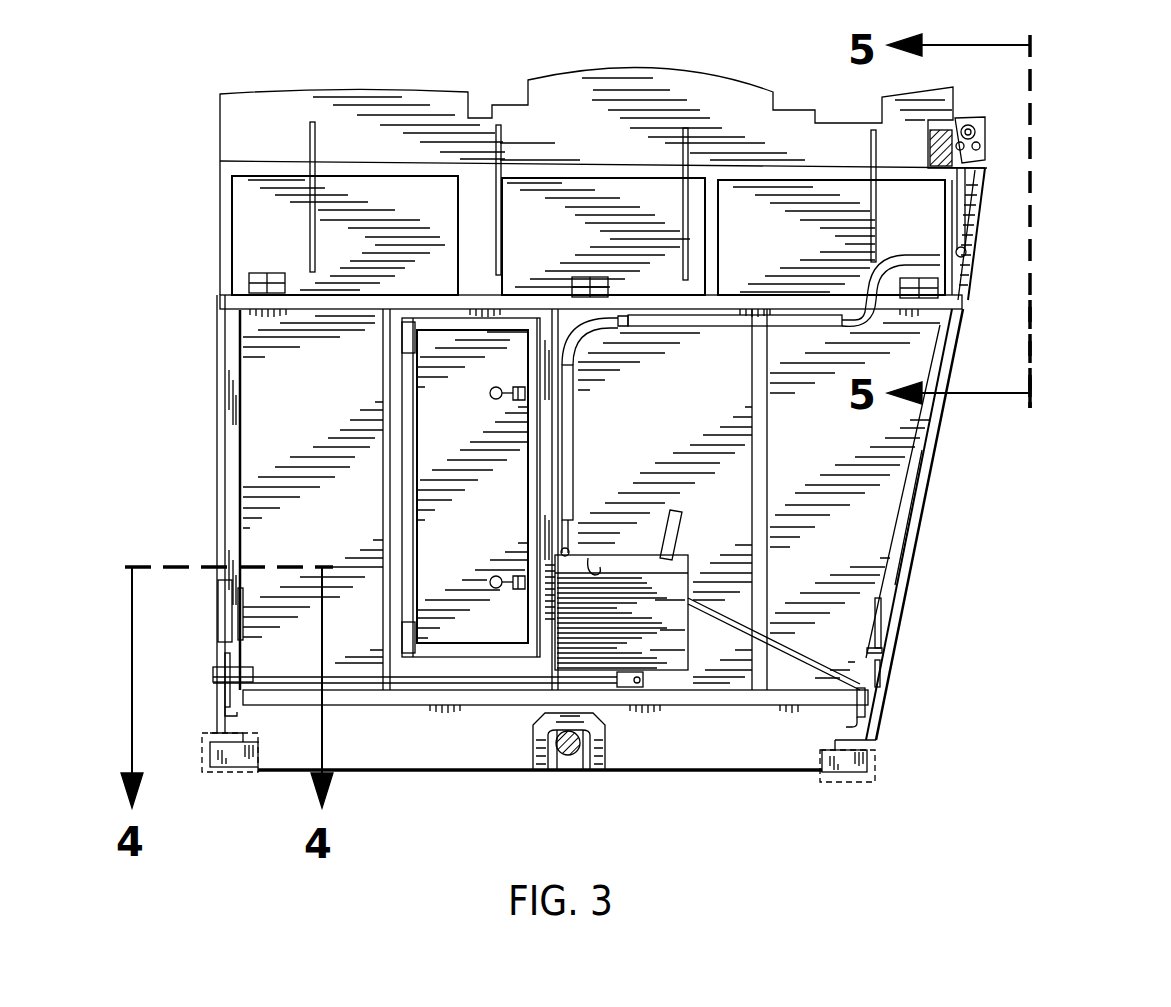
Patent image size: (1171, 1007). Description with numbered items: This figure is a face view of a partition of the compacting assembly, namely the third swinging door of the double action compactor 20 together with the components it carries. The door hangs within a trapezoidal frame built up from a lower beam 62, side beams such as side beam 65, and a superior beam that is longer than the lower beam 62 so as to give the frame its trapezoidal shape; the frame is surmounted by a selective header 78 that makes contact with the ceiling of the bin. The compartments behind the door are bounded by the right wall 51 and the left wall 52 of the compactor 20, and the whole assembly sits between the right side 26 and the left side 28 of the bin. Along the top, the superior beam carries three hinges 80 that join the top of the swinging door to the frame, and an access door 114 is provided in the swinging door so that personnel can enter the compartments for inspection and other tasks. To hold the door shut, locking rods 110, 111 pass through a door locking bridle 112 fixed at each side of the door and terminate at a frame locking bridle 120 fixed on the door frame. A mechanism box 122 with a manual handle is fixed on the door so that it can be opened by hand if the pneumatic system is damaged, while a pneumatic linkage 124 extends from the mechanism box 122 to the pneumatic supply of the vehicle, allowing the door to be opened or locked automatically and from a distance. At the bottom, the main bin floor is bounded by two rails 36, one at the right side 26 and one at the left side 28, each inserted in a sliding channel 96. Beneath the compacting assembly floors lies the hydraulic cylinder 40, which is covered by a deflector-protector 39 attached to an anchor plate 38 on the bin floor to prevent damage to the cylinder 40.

The double action compactor 20 is at (1047, 217).
The right side 26 is at (178, 400).
The left side 28 is at (988, 512).
The rails 36 is at (238, 755).
The anchor plate 38 is at (543, 762).
The deflector-protector 39 is at (607, 750).
The hydraulic cylinder 40 is at (570, 758).
The right wall 51 is at (942, 437).
The left wall 52 is at (217, 338).
The lower beam 62 is at (368, 755).
The side beam 65 is at (900, 547).
The selective header 78 is at (268, 125).
The hinges 80 is at (262, 273).
The sliding channels 96 is at (225, 772).
The locking rod 110 is at (782, 655).
The locking rod 111 is at (452, 680).
The door locking bridle 112 is at (237, 605).
The access door 114 is at (443, 427).
The frame locking bridle 120 is at (223, 660).
The mechanism box 122 is at (652, 615).
The pneumatic linkage 124 is at (838, 328).